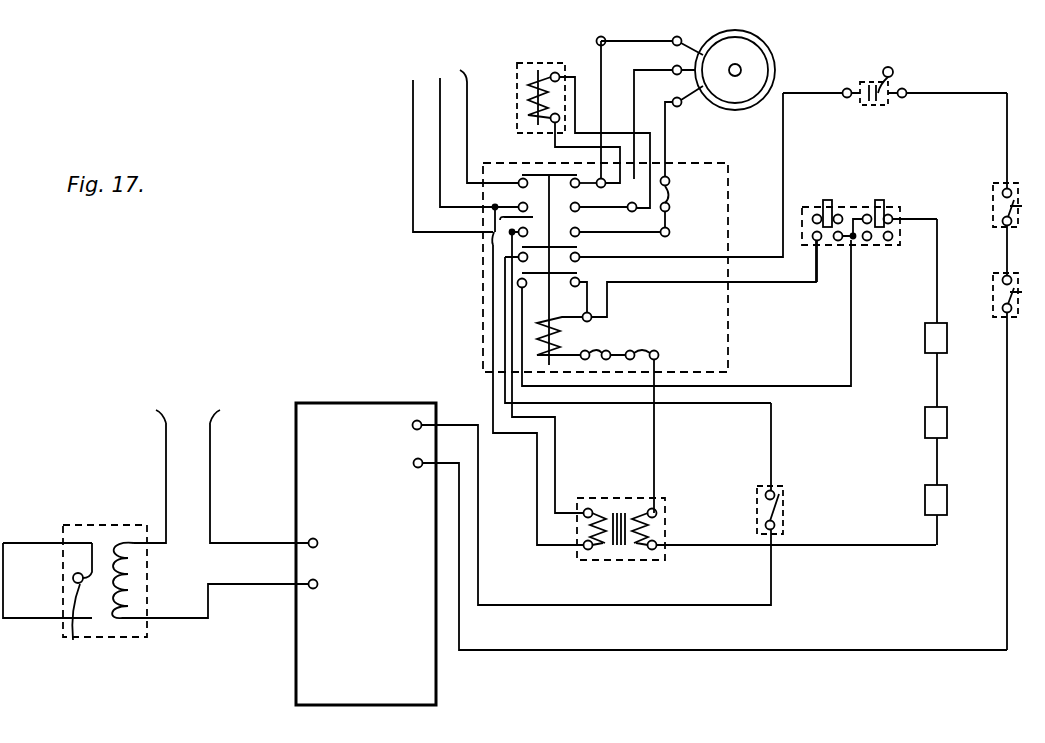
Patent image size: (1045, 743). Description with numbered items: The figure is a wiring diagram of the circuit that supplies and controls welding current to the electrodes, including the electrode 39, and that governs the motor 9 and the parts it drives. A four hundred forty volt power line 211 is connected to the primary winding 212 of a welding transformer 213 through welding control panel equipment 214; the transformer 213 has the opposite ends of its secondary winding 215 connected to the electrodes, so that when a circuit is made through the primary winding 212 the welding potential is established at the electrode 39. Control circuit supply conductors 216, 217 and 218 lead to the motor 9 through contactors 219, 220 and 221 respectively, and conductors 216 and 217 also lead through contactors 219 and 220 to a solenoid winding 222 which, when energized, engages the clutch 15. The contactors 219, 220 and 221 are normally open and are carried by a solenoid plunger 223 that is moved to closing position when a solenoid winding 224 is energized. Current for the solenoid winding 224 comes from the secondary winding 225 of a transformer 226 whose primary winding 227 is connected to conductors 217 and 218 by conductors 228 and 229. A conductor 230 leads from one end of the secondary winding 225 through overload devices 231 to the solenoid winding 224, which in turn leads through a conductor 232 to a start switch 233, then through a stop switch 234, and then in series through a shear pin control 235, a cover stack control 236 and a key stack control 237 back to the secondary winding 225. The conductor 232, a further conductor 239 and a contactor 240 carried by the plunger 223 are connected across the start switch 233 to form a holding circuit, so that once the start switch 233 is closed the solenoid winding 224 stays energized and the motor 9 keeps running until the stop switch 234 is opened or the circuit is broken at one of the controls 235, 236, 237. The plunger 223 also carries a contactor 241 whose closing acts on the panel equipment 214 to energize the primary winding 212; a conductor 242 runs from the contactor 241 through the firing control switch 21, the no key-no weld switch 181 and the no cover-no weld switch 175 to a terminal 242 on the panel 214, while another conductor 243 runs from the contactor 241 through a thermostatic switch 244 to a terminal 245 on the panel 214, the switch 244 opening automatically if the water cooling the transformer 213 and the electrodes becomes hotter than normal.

The motor 9 is at (764, 46).
The clutch 15 is at (546, 62).
The firing control switch 21 is at (892, 85).
The electrode 39 is at (10, 598).
The "no cover-no weld" switch 175 is at (1004, 273).
The "no key-no weld" switch 181 is at (995, 184).
The power line 211 is at (210, 423).
The primary winding 212 is at (122, 548).
The welding transformer 213 is at (73, 528).
The welding control panel equipment 214 is at (366, 554).
The secondary winding 215 is at (92, 608).
The control circuit supply conductor 216 is at (465, 80).
The control circuit supply conductor 217 is at (440, 108).
The control circuit supply conductor 218 is at (413, 82).
The contactor 219 is at (536, 175).
The contactor 220 is at (566, 195).
The contactor 221 is at (500, 216).
The solenoid winding 222 is at (530, 96).
The solenoid plunger 223 is at (548, 290).
The solenoid winding 224 is at (538, 336).
The secondary winding 225 is at (648, 523).
The transformer 226 is at (620, 485).
The primary winding 227 is at (603, 545).
The conductor 228 is at (535, 480).
The conductor 229 is at (557, 448).
The conductor 230 is at (656, 440).
The overload devices 231 is at (638, 352).
The conductor 232 is at (686, 282).
The start switch 233 is at (828, 196).
The stop switch 234 is at (905, 185).
The shear pin control 235 is at (928, 330).
The cover stack control 236 is at (926, 418).
The key stack control 237 is at (927, 488).
The wire 239 is at (800, 375).
The contactor 240 is at (582, 272).
The contactor 241 is at (583, 250).
The conductor 242 is at (700, 247).
The conductor 243 is at (503, 382).
The thermostatic switch 244 is at (782, 514).
The terminal 245 is at (415, 421).